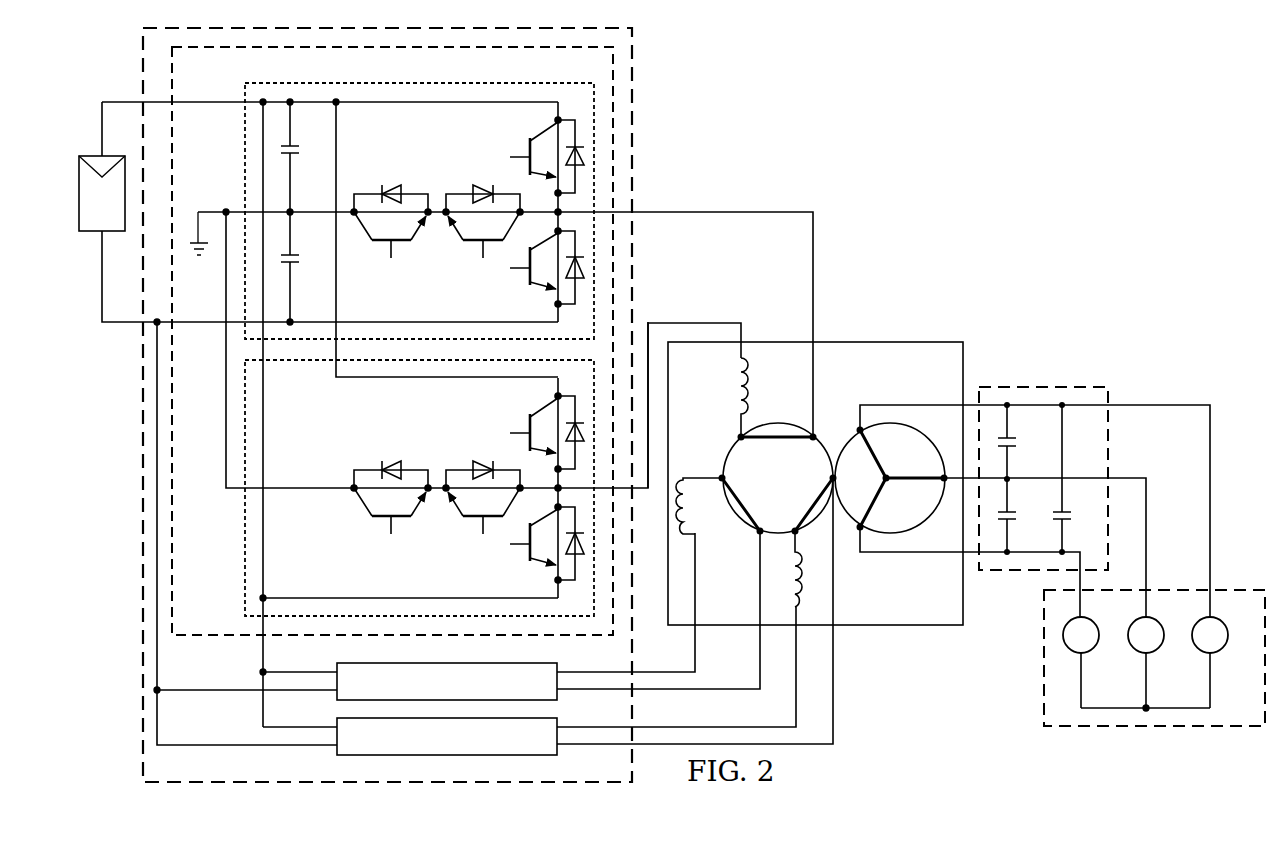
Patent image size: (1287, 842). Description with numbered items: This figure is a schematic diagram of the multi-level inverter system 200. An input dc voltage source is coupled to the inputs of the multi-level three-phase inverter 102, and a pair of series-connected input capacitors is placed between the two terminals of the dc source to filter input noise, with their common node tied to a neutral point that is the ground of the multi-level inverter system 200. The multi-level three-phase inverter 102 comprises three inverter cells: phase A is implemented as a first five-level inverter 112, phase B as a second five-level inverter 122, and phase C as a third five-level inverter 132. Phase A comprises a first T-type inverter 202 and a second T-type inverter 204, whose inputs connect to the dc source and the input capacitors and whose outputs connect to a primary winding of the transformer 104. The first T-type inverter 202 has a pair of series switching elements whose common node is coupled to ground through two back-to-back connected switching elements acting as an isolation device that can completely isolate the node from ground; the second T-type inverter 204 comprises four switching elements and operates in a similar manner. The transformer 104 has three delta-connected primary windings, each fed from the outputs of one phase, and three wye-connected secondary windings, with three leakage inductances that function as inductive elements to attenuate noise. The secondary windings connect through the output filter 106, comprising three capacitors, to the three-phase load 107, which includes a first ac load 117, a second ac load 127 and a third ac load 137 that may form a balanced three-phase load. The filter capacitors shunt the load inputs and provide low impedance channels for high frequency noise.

The multi-level inverter system 200 is at (1065, 162).
The multi-level three-phase inverter 102 is at (633, 117).
The first five-level inverter 112 is at (236, 639).
The first T-type inverter 202 is at (243, 150).
The second T-type inverter 204 is at (241, 572).
The second five-level inverter 122 is at (335, 696).
The third five-level inverter 132 is at (335, 752).
The transformer 104 is at (890, 341).
The output filter 106 is at (1059, 385).
The three-phase load 107 is at (1157, 730).
The first ac load 117 is at (1087, 654).
The second ac load 127 is at (1152, 654).
The third ac load 137 is at (1216, 654).